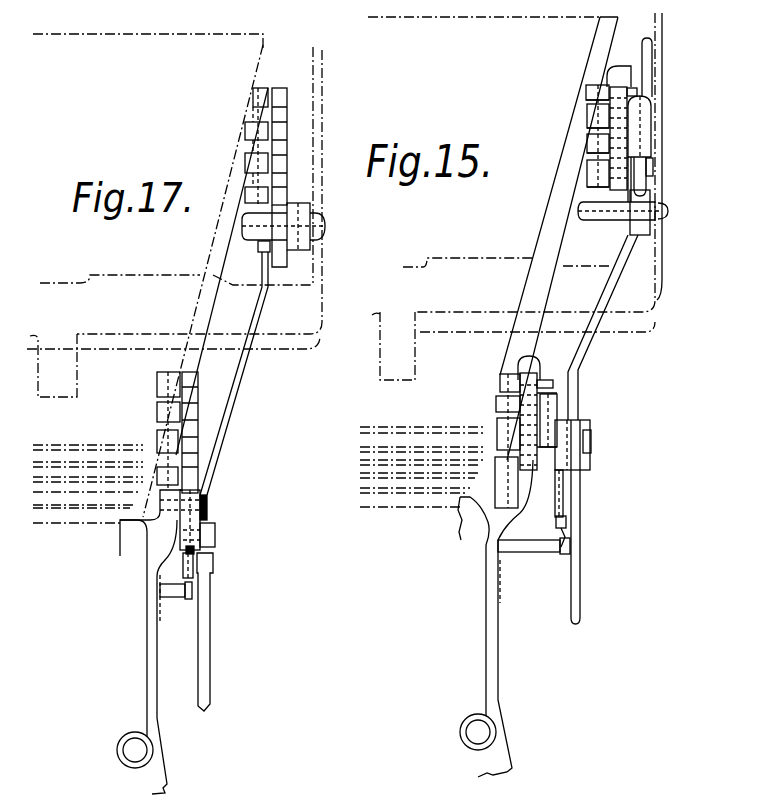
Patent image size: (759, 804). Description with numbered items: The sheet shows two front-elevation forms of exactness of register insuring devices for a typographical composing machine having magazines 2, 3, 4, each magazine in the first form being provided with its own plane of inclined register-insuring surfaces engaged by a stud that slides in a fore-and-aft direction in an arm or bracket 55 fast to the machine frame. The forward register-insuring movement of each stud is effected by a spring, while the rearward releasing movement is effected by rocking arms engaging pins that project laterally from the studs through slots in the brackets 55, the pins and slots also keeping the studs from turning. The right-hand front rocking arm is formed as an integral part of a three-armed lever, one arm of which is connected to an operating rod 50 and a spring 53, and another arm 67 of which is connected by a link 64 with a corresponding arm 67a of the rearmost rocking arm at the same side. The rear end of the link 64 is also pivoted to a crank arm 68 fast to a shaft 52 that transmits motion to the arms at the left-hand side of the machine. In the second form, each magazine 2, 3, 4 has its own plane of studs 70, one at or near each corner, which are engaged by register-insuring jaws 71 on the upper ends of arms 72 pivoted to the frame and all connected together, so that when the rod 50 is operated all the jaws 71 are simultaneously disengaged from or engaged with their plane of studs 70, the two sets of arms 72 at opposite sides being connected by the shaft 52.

In FIG. 17, the magazine 2 is at (76, 514).
In FIG. 15, the magazine 2 is at (412, 498).
In FIG. 17, the magazine 3 is at (39, 488).
In FIG. 15, the magazine 3 is at (363, 480).
In FIG. 17, the magazine 4 is at (62, 442).
In FIG. 15, the magazine 4 is at (376, 437).
In FIG. 17, the operating rod 50 is at (211, 600).
In FIG. 15, the operating rod 50 is at (581, 567).
In FIG. 17, the shaft 52 is at (325, 229).
In FIG. 15, the shaft 52 is at (669, 210).
In FIG. 17, the spring 53 is at (196, 550).
In FIG. 15, the spring 53 is at (567, 522).
In FIG. 15, the arm or bracket 55 is at (518, 372).
In FIG. 17, the link 64 is at (256, 317).
In FIG. 15, the link 64 is at (607, 292).
In FIG. 15, the arm 67 is at (557, 472).
In FIG. 15, the arm 67a is at (640, 155).
In FIG. 15, the crank arm 68 is at (647, 182).
In FIG. 17, the stud 70 is at (283, 181).
In FIG. 17, the register-insuring jaw 71 is at (283, 112).
In FIG. 17, the arm 72 is at (283, 88).